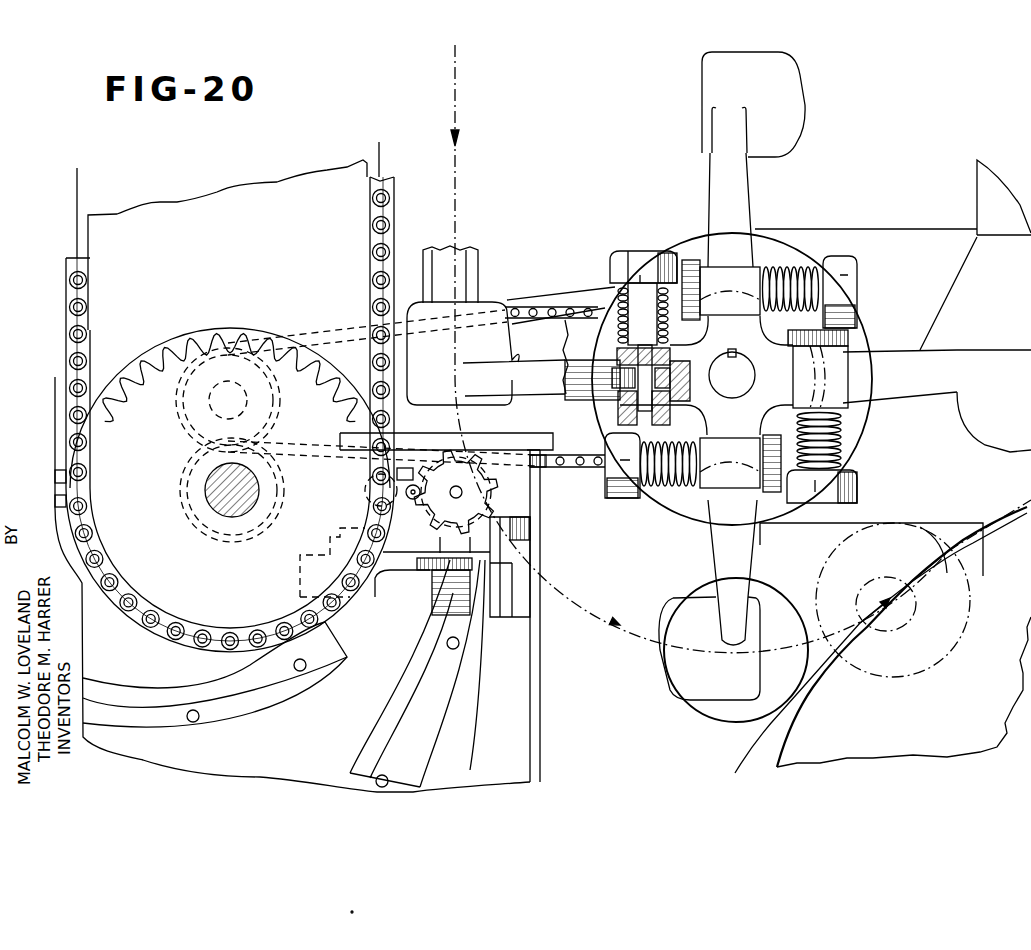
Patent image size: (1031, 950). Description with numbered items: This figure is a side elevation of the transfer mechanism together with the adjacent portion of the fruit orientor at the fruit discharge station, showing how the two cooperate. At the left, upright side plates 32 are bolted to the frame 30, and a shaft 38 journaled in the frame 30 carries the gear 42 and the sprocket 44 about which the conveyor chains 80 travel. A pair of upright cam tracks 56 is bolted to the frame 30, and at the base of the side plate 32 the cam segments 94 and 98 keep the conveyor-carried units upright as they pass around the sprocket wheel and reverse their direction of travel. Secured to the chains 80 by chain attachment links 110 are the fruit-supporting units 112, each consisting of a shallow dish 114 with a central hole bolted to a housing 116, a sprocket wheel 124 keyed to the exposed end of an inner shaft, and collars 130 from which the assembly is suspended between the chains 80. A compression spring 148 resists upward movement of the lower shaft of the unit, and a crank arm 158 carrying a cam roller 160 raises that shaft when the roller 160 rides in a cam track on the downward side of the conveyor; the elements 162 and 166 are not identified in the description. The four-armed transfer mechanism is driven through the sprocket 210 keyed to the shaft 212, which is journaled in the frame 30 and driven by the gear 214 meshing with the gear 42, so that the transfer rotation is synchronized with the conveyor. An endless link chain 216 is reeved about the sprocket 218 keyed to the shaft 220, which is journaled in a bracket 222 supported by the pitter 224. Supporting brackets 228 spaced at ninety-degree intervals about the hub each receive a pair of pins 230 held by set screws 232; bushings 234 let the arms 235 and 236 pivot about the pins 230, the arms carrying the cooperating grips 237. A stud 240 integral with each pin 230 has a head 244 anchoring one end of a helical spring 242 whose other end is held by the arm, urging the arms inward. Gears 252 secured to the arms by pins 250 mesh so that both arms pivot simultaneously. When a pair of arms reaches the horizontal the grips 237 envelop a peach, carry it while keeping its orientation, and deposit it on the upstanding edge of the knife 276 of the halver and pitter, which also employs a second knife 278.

The frame 30 is at (387, 674).
The upright side plates 32 is at (226, 235).
The shaft 38 is at (240, 516).
The gear 42 is at (281, 509).
The sprocket 44 is at (151, 546).
The upright cam tracks 56 is at (470, 265).
The chains 80 is at (65, 288).
The cam segment 94 is at (291, 683).
The cam segment 98 is at (432, 700).
The chain attachment links 110 is at (398, 492).
The fruit-supporting units 112 is at (531, 506).
The shallow dish 114 is at (433, 444).
The housing 116 is at (493, 457).
The sprocket wheel 124 is at (441, 515).
The collars 130 is at (410, 470).
The compression spring 148 is at (433, 584).
The crank arm 158 is at (502, 620).
The cam roller 160 is at (531, 531).
The bracket 162 is at (388, 575).
The cam member 166 is at (297, 595).
The sprocket 210 is at (182, 396).
The shaft 212 is at (225, 385).
The gear 214 is at (279, 416).
The endless link chain 216 is at (546, 307).
The sprocket 218 is at (851, 346).
The shaft 220 is at (743, 333).
The bracket 222 is at (922, 290).
The pitter 224 is at (988, 158).
The supporting brackets 228 is at (612, 364).
The pins 230 is at (732, 375).
The set screws 232 is at (613, 378).
The bushings 234 is at (665, 358).
The arm 235 is at (712, 184).
The arm 236 is at (584, 400).
The grip 237 is at (483, 322).
The stud 240 is at (633, 322).
The helical spring 242 is at (618, 300).
The head 244 is at (640, 258).
The pins 250 is at (698, 392).
The gear 252 is at (689, 258).
The knife 276 is at (915, 727).
The knife 278 is at (938, 486).